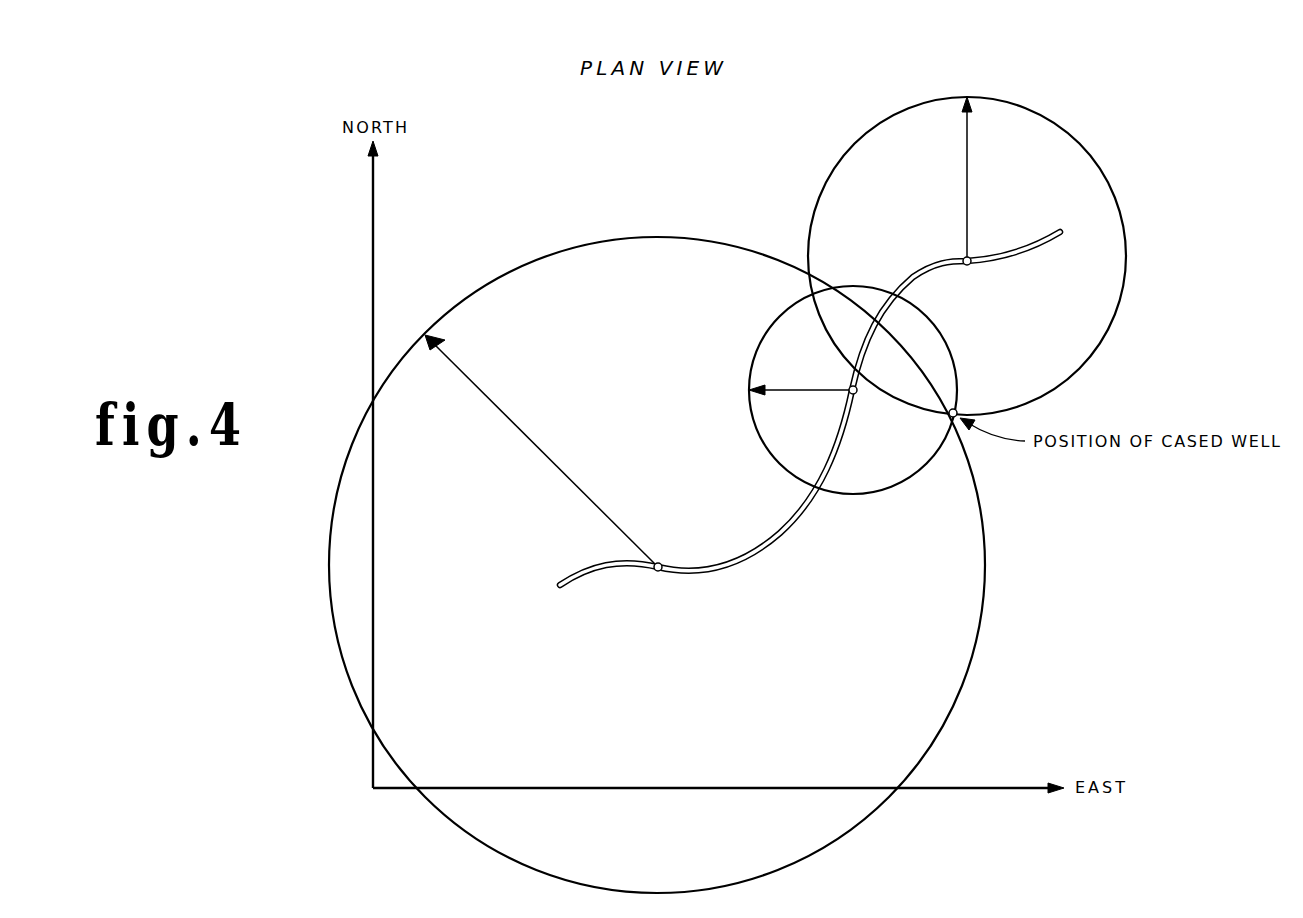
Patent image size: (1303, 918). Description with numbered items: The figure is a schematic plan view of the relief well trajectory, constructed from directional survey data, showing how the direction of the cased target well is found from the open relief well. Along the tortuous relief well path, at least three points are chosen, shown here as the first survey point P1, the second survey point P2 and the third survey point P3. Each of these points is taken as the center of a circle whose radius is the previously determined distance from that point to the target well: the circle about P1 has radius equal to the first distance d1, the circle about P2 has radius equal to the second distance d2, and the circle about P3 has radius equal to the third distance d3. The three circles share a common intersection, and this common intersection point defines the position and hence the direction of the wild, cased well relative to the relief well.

The first survey point P1 is at (967, 277).
The second survey point P2 is at (863, 401).
The third survey point P3 is at (660, 583).
The first distance d1 is at (954, 179).
The second distance d2 is at (801, 381).
The third distance d3 is at (541, 451).